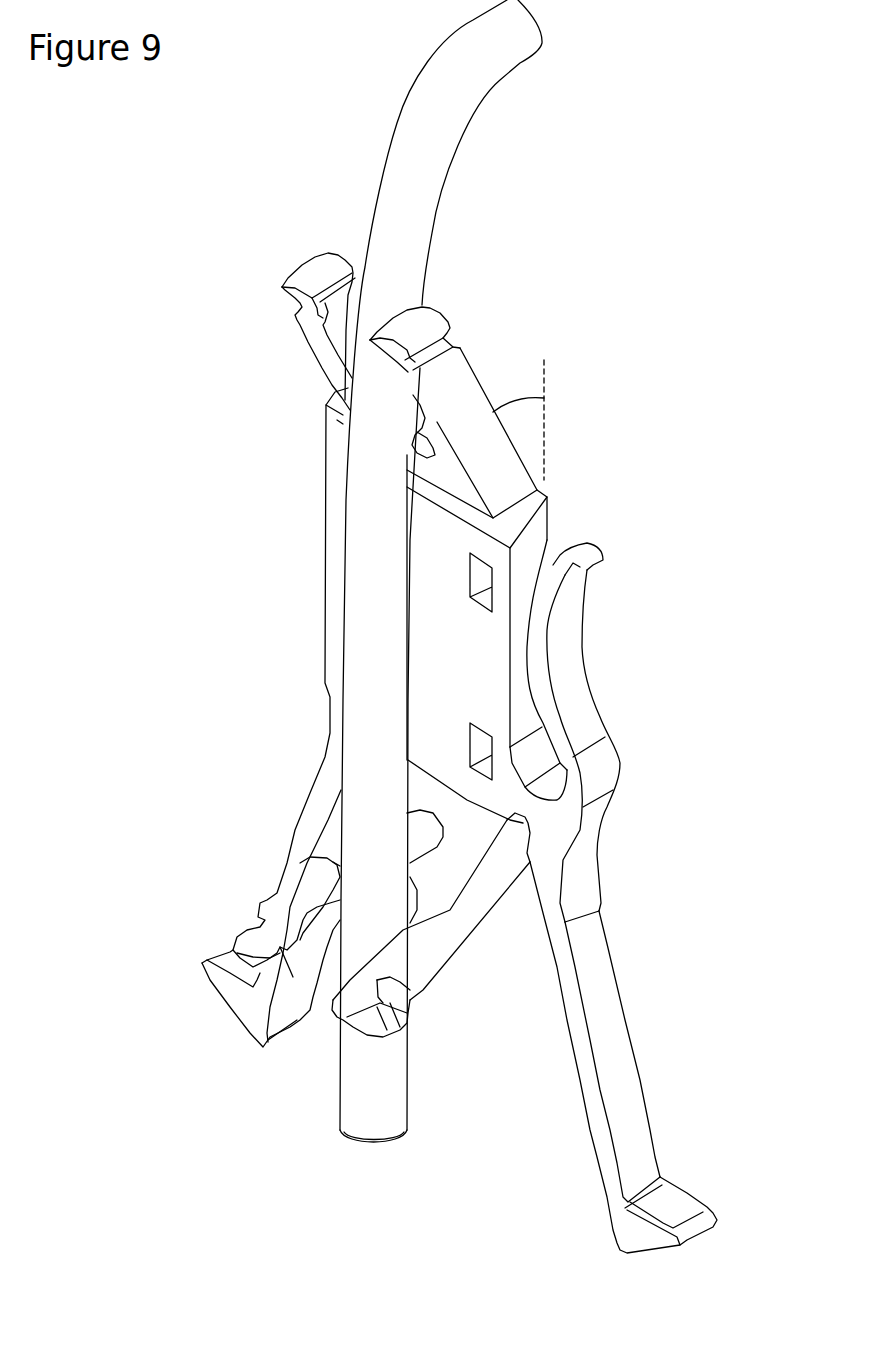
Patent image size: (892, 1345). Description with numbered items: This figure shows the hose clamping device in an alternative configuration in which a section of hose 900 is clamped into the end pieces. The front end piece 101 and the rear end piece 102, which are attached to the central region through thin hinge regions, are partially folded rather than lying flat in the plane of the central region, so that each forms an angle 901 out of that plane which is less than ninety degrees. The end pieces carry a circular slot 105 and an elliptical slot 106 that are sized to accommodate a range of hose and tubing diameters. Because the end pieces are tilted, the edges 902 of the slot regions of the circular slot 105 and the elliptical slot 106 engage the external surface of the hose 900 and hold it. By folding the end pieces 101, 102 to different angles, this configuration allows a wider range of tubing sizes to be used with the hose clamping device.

The hose 900 is at (430, 133).
The rear end piece 102 is at (468, 408).
The angle 901 is at (513, 407).
The edges 902 is at (333, 862).
The elliptical slot 106 is at (333, 967).
The circular slot 105 is at (428, 848).
The front end piece 101 is at (430, 960).